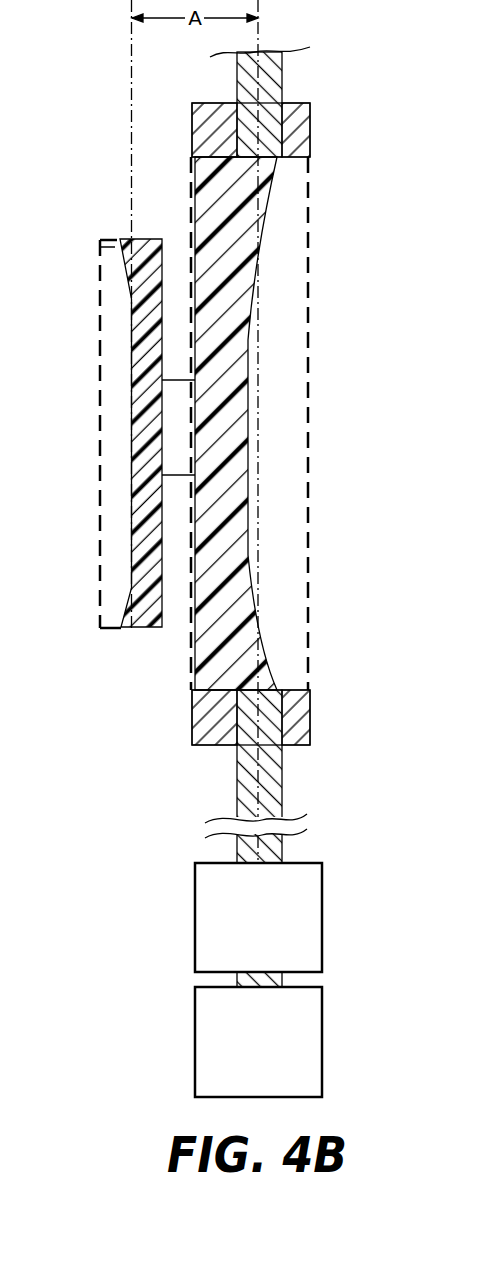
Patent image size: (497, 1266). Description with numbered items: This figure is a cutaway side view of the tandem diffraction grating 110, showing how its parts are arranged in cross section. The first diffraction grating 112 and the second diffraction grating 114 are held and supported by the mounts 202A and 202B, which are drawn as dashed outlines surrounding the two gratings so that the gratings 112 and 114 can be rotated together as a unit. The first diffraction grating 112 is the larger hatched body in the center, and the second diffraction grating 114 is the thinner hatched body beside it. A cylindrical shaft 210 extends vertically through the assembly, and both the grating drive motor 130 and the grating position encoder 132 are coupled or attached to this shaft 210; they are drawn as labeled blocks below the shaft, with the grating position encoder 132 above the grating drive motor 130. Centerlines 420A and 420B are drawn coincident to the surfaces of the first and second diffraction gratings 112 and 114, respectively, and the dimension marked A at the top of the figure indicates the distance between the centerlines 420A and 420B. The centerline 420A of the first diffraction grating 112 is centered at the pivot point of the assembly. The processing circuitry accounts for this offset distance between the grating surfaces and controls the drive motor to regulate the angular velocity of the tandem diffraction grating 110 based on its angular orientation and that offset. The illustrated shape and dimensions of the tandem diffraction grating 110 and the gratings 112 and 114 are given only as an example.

The tandem diffraction grating 110 is at (77, 189).
The first diffraction grating 112 is at (195, 661).
The second diffraction grating 114 is at (152, 240).
The cylindrical shaft 210 is at (237, 72).
The centerline 420A is at (257, 300).
The centerline 420B is at (131, 102).
The mount 202A is at (308, 348).
The mount 202B is at (100, 340).
The grating position encoder 132 is at (258, 917).
The grating drive motor 130 is at (258, 1042).